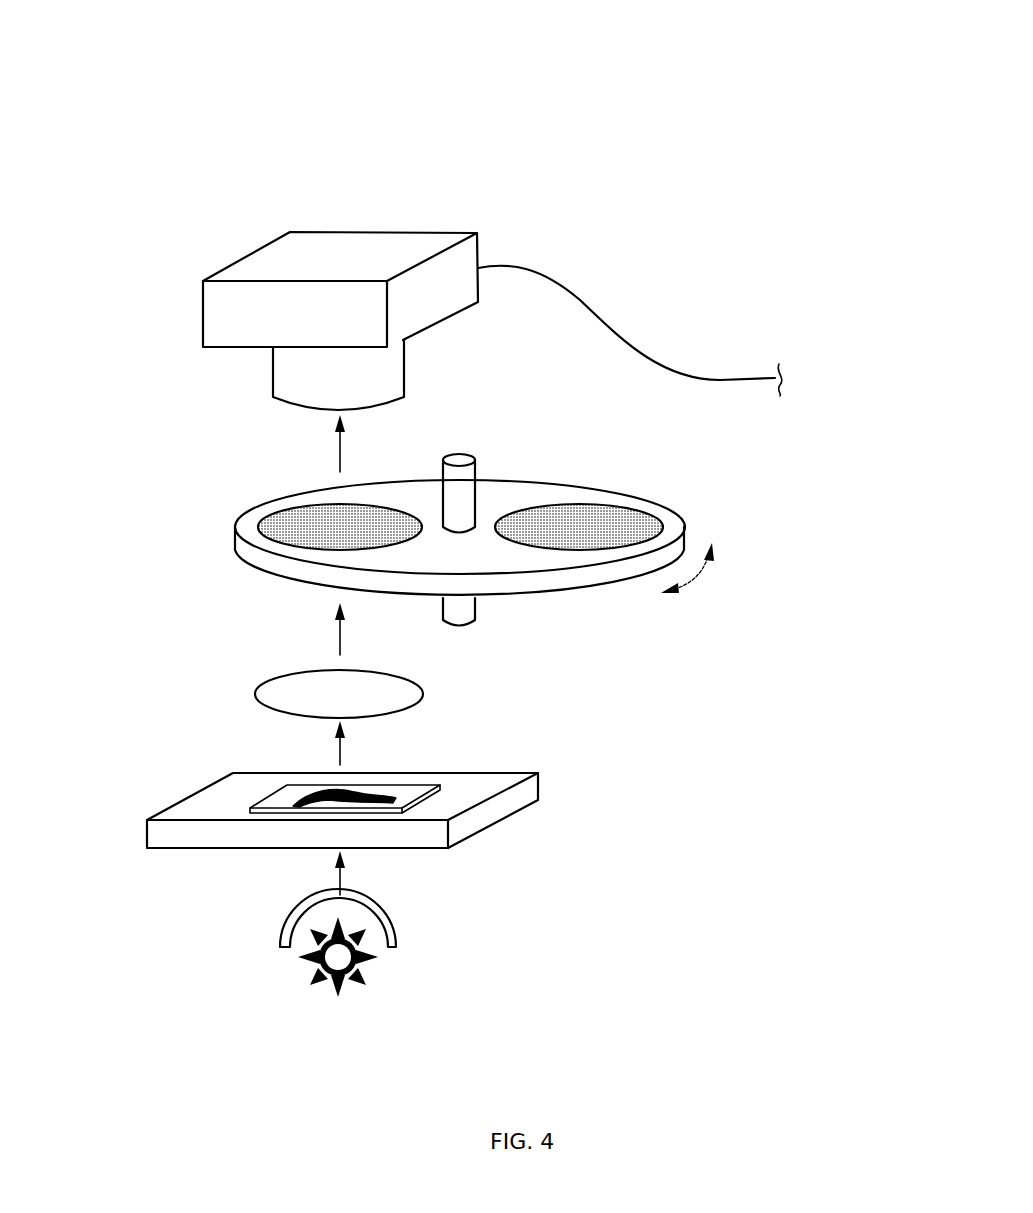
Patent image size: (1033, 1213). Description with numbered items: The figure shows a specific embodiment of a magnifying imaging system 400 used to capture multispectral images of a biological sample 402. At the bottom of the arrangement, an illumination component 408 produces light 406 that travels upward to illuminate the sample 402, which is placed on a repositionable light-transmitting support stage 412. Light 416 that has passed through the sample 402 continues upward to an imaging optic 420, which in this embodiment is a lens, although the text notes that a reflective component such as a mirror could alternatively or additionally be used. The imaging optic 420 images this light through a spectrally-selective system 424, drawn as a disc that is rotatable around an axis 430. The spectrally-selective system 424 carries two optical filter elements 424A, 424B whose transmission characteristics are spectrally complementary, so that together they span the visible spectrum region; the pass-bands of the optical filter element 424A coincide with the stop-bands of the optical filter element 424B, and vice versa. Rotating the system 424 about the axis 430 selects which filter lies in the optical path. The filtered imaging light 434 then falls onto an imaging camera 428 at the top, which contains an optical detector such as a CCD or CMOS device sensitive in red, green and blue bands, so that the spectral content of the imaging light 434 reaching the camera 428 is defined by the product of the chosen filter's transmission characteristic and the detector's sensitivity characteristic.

The magnifying imaging system 400 is at (570, 104).
The imaging camera 428 is at (401, 232).
The imaging light 434 is at (343, 442).
The spectrally-selective system 424 is at (500, 560).
The optical filter element 424A is at (374, 503).
The optical filter element 424B is at (580, 502).
The axis 430 is at (463, 455).
The imaging optic 420 is at (285, 670).
The light 416 is at (340, 746).
The repositionable light-transmitting support stage 412 is at (215, 778).
The biological sample 402 is at (385, 800).
The light 406 is at (345, 873).
The illumination component 408 is at (282, 940).